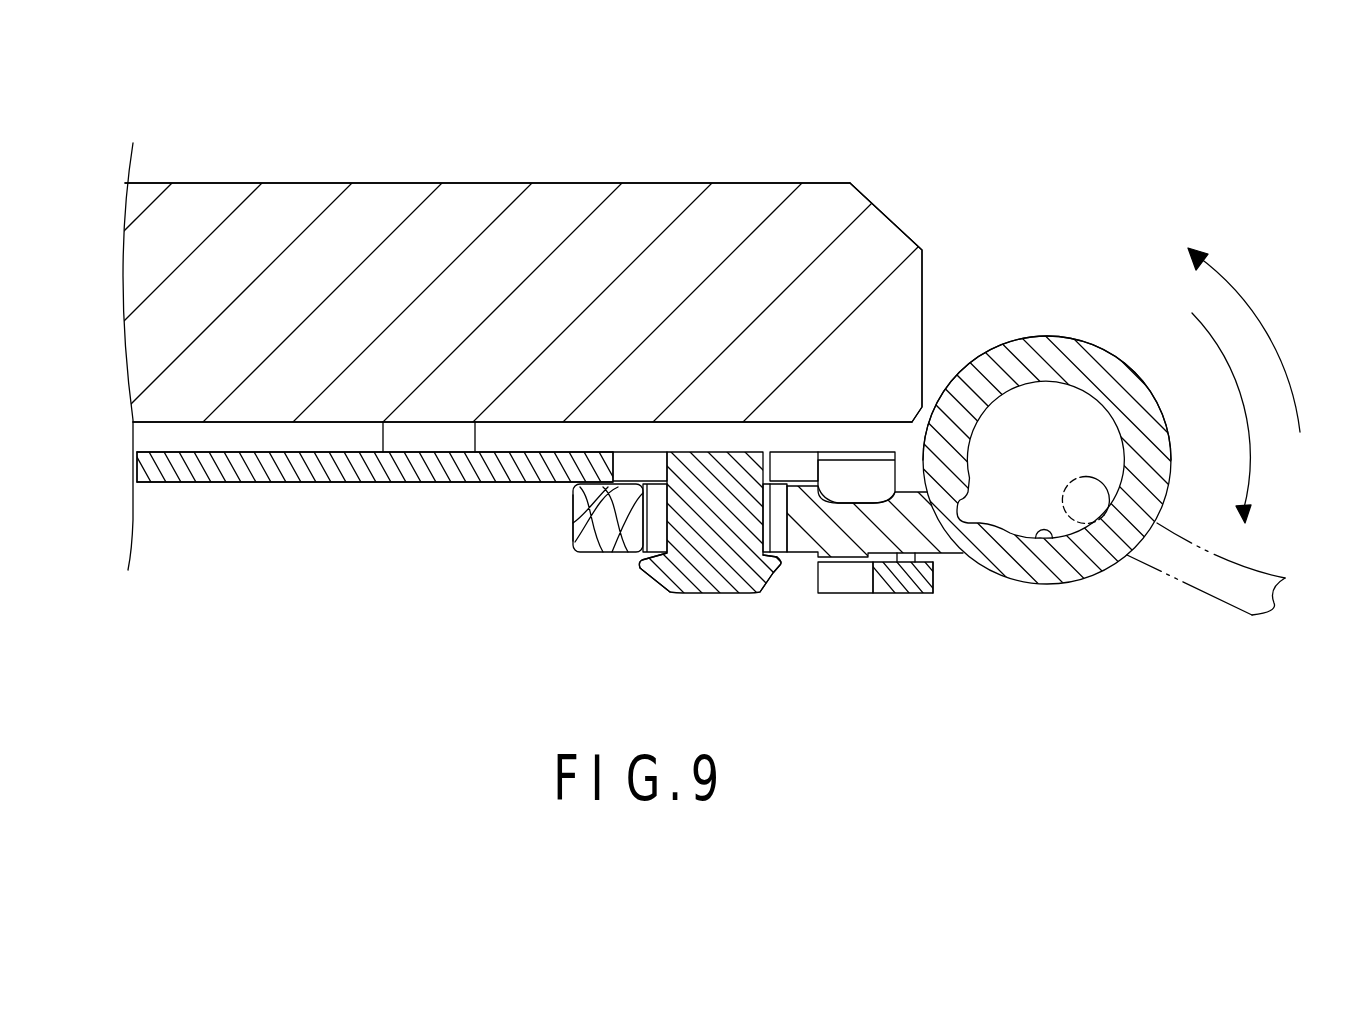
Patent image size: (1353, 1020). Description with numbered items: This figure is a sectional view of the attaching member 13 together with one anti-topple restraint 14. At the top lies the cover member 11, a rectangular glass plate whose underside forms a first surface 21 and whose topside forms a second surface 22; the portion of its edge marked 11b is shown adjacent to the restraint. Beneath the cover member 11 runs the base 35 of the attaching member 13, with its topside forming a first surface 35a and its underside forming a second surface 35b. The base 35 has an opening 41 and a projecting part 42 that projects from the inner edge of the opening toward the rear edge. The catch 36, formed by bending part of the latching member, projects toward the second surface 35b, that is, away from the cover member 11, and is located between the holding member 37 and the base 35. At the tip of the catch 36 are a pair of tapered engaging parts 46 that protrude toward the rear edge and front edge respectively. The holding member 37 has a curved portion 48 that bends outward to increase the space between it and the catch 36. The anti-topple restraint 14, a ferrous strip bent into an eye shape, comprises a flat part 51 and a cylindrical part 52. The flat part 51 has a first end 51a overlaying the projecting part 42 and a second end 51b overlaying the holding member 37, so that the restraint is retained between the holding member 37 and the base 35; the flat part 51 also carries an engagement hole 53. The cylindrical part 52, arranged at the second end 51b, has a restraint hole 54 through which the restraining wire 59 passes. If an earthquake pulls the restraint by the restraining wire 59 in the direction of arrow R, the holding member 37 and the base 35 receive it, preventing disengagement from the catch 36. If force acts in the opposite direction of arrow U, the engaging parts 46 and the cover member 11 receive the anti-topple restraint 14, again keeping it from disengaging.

The cover member 11 is at (400, 183).
The chamfered edge of panel 11b is at (922, 290).
The attaching member 13 is at (212, 483).
The anti-topple restraint 14 is at (1045, 336).
The first surface 21 is at (148, 423).
The second surface 22 is at (266, 183).
The base 35 is at (318, 483).
The first surface 35a is at (135, 446).
The second surface 35b is at (142, 495).
The catch 36 is at (703, 592).
The holding member 37 is at (846, 582).
The opening 41 is at (630, 463).
The projecting part 42 is at (573, 523).
The engaging parts 46 is at (650, 575).
The curved portion 48 is at (897, 585).
The flat part 51 is at (588, 553).
The first end 51a is at (573, 505).
The second end 51b is at (934, 572).
The cylindrical part 52 is at (1020, 335).
The engagement hole 53 is at (778, 532).
The restraint hole 54 is at (1037, 537).
The restraining wire 59 is at (1205, 598).
The arrow U is at (1273, 345).
The arrow R is at (1252, 470).